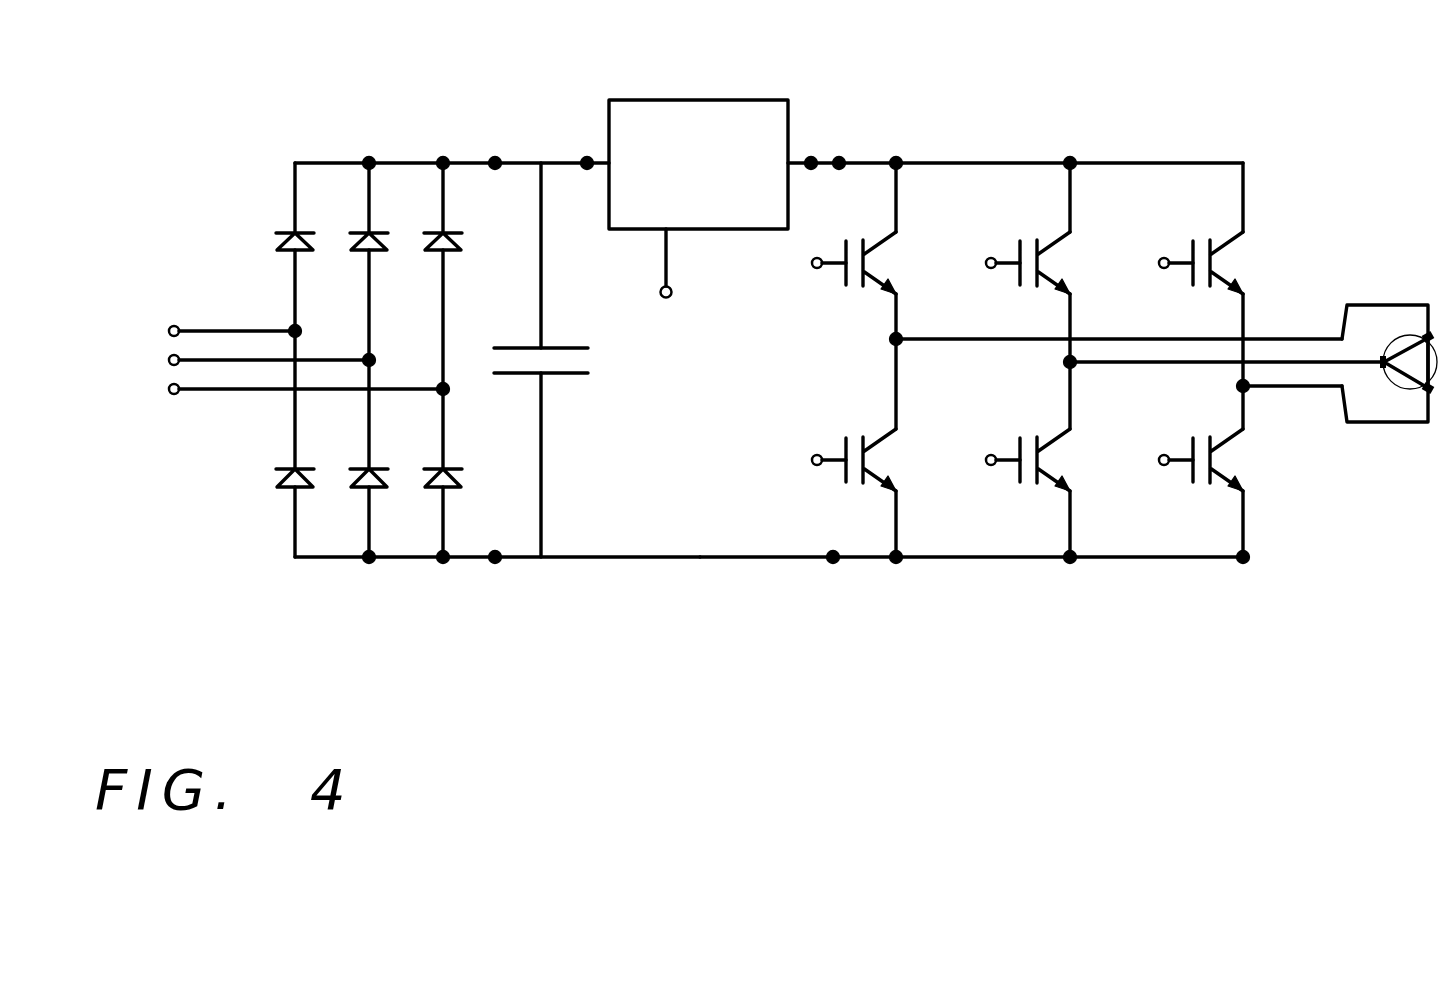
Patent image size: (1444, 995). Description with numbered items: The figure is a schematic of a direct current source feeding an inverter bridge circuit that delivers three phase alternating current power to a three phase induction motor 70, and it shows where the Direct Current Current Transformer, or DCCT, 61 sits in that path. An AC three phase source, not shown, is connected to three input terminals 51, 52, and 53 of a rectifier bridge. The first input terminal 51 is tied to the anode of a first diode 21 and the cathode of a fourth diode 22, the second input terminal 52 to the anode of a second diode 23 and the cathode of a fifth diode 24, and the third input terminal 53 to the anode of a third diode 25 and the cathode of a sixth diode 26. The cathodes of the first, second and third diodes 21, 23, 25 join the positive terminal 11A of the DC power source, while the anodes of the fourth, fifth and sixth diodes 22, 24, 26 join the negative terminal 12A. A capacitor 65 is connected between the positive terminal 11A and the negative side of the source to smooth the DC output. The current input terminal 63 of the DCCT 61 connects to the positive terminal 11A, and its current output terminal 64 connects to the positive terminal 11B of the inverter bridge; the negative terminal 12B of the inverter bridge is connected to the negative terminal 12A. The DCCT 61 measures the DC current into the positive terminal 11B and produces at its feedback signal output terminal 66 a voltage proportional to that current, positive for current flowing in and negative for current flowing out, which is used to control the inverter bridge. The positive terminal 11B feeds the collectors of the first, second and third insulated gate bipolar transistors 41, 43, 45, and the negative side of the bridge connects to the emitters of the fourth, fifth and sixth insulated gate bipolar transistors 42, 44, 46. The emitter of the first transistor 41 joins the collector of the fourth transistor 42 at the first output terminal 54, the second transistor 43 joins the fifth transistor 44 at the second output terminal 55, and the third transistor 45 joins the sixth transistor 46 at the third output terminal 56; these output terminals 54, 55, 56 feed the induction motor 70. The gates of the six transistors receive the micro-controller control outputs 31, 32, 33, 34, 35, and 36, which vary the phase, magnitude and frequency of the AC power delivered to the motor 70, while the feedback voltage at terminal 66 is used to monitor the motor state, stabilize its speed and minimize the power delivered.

The positive terminal of the DC power source 11A is at (495, 160).
The positive terminal of the inverter bridge circuit 11B is at (839, 160).
The negative terminal of the DC power source 12A is at (495, 561).
The negative terminal of the inverter bridge circuit 12B is at (833, 561).
The first diode 21 is at (285, 232).
The fourth diode 22 is at (285, 488).
The second diode 23 is at (357, 230).
The fifth diode 24 is at (357, 495).
The third diode 25 is at (431, 230).
The sixth diode 26 is at (431, 495).
The control output 31 is at (812, 270).
The control output 32 is at (812, 467).
The control output 33 is at (986, 270).
The control output 34 is at (986, 467).
The control output 35 is at (1159, 270).
The control output 36 is at (1159, 467).
The first insulated gate bipolar transistor 41 is at (866, 258).
The fourth insulated gate bipolar transistor 42 is at (878, 455).
The second insulated gate bipolar transistor 43 is at (1040, 258).
The fifth insulated gate bipolar transistor 44 is at (1052, 455).
The third insulated gate bipolar transistor 45 is at (1213, 258).
The sixth insulated gate bipolar transistor 46 is at (1225, 455).
The first input terminal 51 is at (169, 331).
The second input terminal 52 is at (169, 358).
The third input terminal 53 is at (169, 389).
The first output terminal of the inverter bridge circuit 54 is at (894, 346).
The second output terminal of the inverter bridge circuit 55 is at (1068, 369).
The third output terminal of the inverter bridge circuit 56 is at (1241, 393).
The Direct Current Current Transformer 61 is at (712, 100).
The current input terminal 63 is at (587, 160).
The current output terminal 64 is at (811, 160).
The capacitor 65 is at (535, 361).
The feedback signal output terminal 66 is at (664, 300).
The three phase induction motor 70 is at (1410, 389).